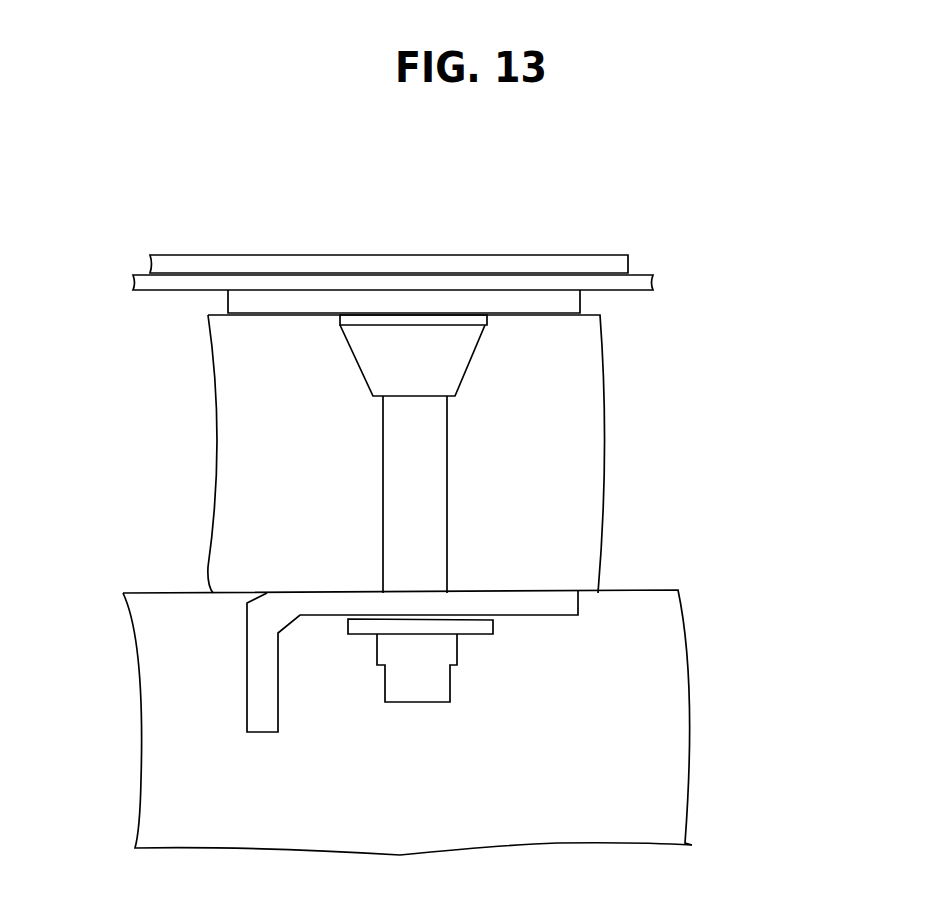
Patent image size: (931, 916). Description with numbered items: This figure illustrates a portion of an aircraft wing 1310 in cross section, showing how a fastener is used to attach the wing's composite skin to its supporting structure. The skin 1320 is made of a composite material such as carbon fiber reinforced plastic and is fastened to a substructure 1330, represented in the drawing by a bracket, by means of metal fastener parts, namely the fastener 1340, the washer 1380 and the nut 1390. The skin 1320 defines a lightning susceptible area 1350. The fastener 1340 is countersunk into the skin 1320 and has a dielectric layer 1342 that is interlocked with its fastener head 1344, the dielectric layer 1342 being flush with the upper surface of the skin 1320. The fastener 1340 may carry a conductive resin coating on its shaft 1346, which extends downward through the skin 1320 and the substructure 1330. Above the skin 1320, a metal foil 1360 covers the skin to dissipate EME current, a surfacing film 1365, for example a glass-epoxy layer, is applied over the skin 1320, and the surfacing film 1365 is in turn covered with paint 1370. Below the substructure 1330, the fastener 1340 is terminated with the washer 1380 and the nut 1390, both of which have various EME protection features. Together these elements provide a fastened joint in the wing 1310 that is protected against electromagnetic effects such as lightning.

The aircraft wing 1310 is at (314, 203).
The skin 1320 is at (607, 432).
The substructure 1330 is at (265, 732).
The fastener 1340 is at (458, 518).
The dielectric layer 1342 is at (488, 318).
The fastener head 1344 is at (463, 380).
The shaft 1346 is at (384, 493).
The lightning susceptible area 1350 is at (600, 825).
The metal foil 1360 is at (228, 303).
The surfacing film 1365 is at (623, 291).
The paint 1370 is at (545, 253).
The washer 1380 is at (493, 627).
The nut 1390 is at (457, 652).